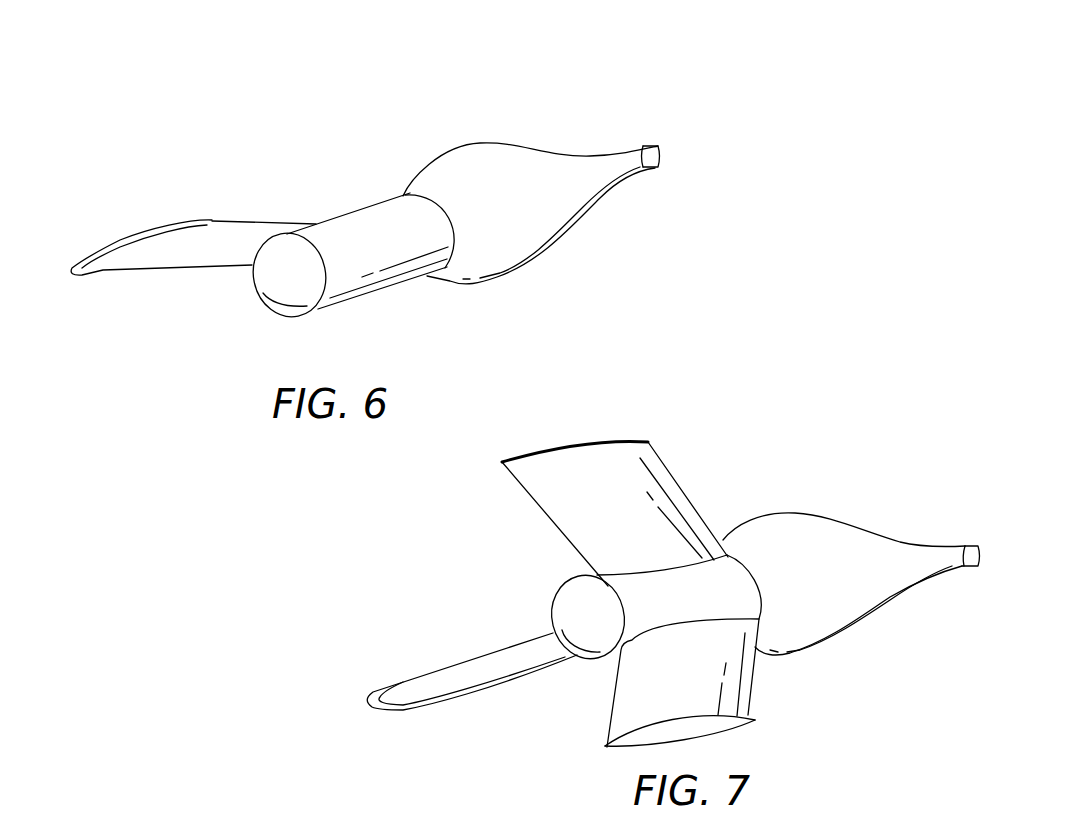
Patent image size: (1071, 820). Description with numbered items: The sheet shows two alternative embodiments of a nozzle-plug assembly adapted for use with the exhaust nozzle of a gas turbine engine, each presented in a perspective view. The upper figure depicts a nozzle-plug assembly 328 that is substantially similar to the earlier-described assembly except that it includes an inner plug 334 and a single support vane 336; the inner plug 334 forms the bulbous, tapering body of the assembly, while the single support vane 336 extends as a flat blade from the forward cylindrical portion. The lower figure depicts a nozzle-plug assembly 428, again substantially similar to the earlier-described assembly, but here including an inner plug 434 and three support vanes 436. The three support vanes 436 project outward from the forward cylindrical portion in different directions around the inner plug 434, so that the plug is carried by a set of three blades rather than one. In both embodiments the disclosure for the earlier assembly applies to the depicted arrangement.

In FIG. 6, the nozzle-plug assembly 328 is at (390, 174).
In FIG. 6, the inner plug 334 is at (548, 138).
In FIG. 6, the support vane 336 is at (250, 198).
In FIG. 7, the nozzle-plug assembly 428 is at (674, 532).
In FIG. 7, the inner plug 434 is at (853, 517).
In FIG. 7, the support vanes 436 is at (600, 703).